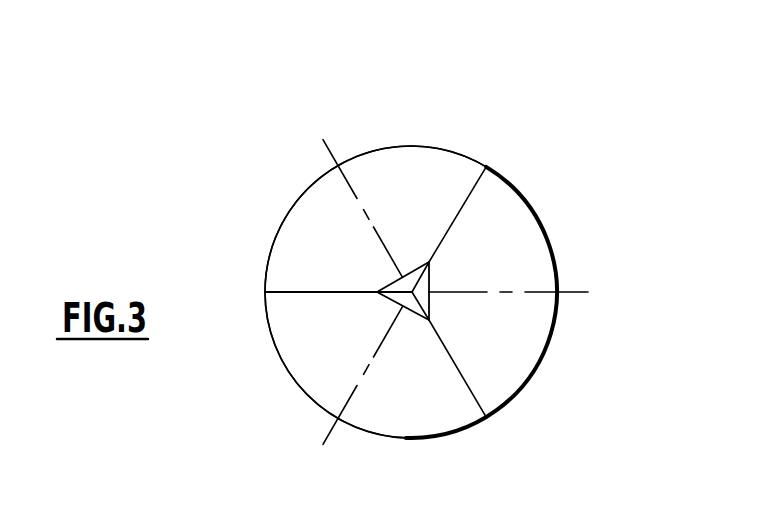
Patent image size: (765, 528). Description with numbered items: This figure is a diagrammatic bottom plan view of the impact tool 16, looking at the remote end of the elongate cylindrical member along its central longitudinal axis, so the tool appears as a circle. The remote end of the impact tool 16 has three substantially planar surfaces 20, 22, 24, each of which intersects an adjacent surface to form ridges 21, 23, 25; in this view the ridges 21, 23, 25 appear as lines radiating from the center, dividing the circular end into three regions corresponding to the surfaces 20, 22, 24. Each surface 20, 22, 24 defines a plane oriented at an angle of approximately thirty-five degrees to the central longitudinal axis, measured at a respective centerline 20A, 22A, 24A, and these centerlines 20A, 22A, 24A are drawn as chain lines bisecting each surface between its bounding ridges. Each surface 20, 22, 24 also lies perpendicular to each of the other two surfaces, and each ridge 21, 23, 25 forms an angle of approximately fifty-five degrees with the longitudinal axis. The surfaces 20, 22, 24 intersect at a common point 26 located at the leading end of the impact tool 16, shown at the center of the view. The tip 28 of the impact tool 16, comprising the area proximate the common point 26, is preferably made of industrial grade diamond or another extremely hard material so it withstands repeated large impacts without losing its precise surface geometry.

The impact tool 16 is at (512, 398).
The planar surface 20 is at (330, 385).
The centerline 20A is at (345, 393).
The ridge 21 is at (473, 397).
The planar surface 22 is at (528, 232).
The centerline 22A is at (536, 293).
The ridge 23 is at (477, 191).
The planar surface 24 is at (323, 202).
The centerline 24A is at (350, 191).
The ridge 25 is at (290, 292).
The common point 26 is at (430, 304).
The tip 28 is at (415, 270).